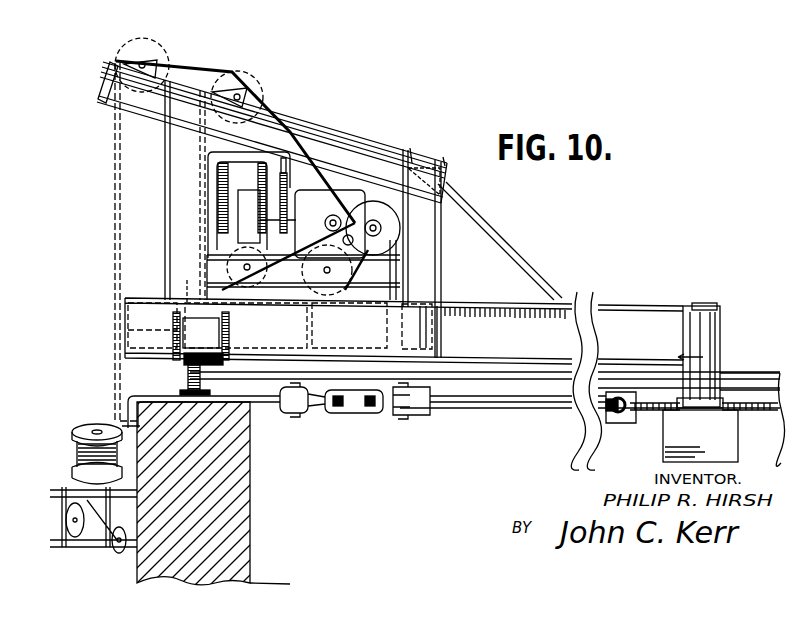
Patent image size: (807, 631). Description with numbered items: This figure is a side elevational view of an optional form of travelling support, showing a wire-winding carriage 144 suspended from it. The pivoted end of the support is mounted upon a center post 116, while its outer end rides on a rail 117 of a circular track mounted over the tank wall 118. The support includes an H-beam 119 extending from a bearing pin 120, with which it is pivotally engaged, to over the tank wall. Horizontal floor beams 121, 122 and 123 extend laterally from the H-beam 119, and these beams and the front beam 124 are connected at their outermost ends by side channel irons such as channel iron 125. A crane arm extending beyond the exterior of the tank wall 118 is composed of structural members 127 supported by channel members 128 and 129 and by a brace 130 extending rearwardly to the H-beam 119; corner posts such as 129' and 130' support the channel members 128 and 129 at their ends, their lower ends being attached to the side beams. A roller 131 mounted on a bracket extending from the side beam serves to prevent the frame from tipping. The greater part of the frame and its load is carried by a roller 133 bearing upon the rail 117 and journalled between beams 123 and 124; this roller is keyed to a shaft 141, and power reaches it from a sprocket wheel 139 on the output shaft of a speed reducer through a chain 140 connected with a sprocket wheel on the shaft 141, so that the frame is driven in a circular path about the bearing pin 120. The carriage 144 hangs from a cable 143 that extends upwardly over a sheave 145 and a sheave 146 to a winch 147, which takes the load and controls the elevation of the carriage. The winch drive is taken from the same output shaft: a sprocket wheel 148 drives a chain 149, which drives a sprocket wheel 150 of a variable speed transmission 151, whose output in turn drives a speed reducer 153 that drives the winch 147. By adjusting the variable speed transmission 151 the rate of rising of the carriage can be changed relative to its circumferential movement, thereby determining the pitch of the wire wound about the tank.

The center post 116 is at (666, 445).
The rail 117 is at (186, 381).
The tank wall 118 is at (233, 540).
The H-beam 119 is at (404, 374).
The bearing pin 120 is at (702, 303).
The horizontal floor beam 121 is at (384, 330).
The horizontal floor beam 122 is at (306, 320).
The horizontal floor beam 123 is at (236, 320).
The front beam 124 is at (140, 318).
The channel iron 125 is at (415, 338).
The structural member 127 is at (108, 93).
The channel member 128 is at (418, 157).
The channel member 129 is at (272, 119).
The corner post 129' is at (453, 253).
The brace 130 is at (500, 241).
The corner post 130' is at (150, 190).
The roller 131 is at (180, 355).
The roller 133 is at (187, 283).
The sprocket wheel 139 is at (216, 206).
The chain 140 is at (226, 262).
The shaft 141 is at (125, 333).
The cable 143 is at (114, 248).
The carriage 144 is at (95, 512).
The sheave 145 is at (153, 54).
The sheave 146 is at (248, 82).
The winch 147 is at (343, 195).
The sprocket wheel 148 is at (314, 238).
The chain 149 is at (283, 212).
The sprocket wheel 150 is at (284, 170).
The variable speed transmission 151 is at (215, 152).
The speed reducer 153 is at (357, 226).